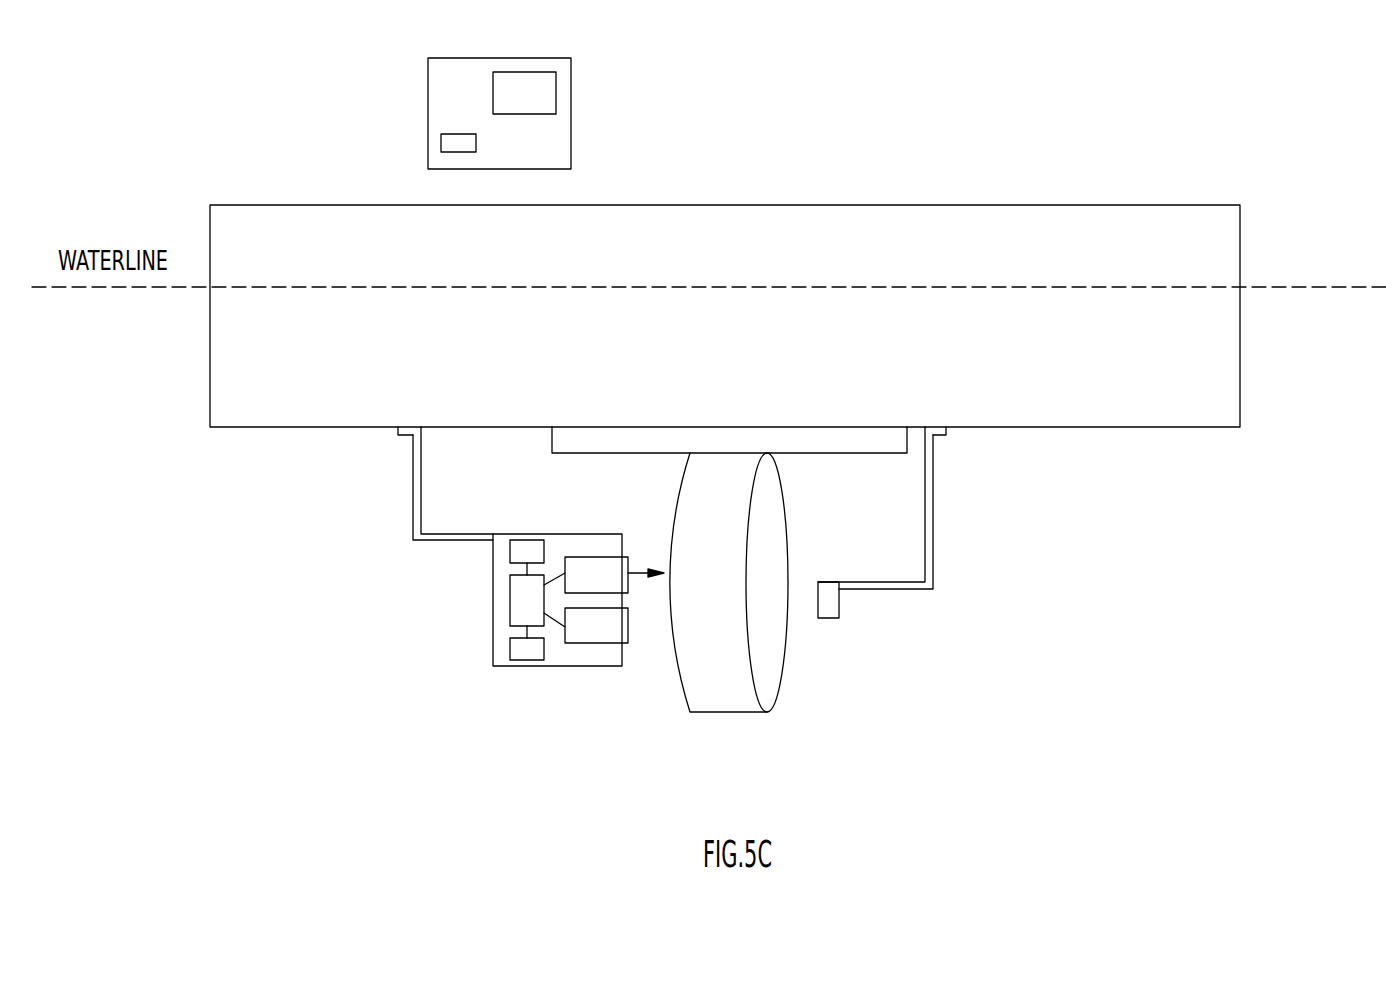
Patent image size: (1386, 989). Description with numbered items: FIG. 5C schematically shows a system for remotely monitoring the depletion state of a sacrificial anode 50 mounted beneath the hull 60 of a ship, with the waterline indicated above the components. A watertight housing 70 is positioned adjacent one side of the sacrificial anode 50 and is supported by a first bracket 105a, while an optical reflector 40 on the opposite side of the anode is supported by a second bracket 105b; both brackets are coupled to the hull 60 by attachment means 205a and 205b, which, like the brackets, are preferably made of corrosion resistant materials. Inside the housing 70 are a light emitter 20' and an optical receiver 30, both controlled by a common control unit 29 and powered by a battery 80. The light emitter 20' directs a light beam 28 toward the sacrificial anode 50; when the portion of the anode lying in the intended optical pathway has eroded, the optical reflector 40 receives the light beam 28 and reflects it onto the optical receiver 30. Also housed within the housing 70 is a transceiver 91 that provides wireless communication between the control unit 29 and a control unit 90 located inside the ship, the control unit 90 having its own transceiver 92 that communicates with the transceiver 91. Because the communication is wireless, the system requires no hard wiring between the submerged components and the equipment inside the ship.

The control unit 90 is at (533, 58).
The transceiver 92 is at (441, 145).
The hull 60 is at (740, 368).
The attachment means 205a is at (407, 436).
The attachment means 205b is at (940, 436).
The first bracket 105a is at (421, 492).
The second bracket 105b is at (925, 541).
The optical reflector 40 is at (828, 582).
The watertight housing 70 is at (558, 666).
The transceiver 91 is at (522, 540).
The control unit 29 is at (510, 600).
The battery 80 is at (510, 650).
The light emitter 20' is at (596, 543).
The optical receiver 30 is at (597, 643).
The light beam 28 is at (640, 573).
The sacrificial anode 50 is at (712, 713).